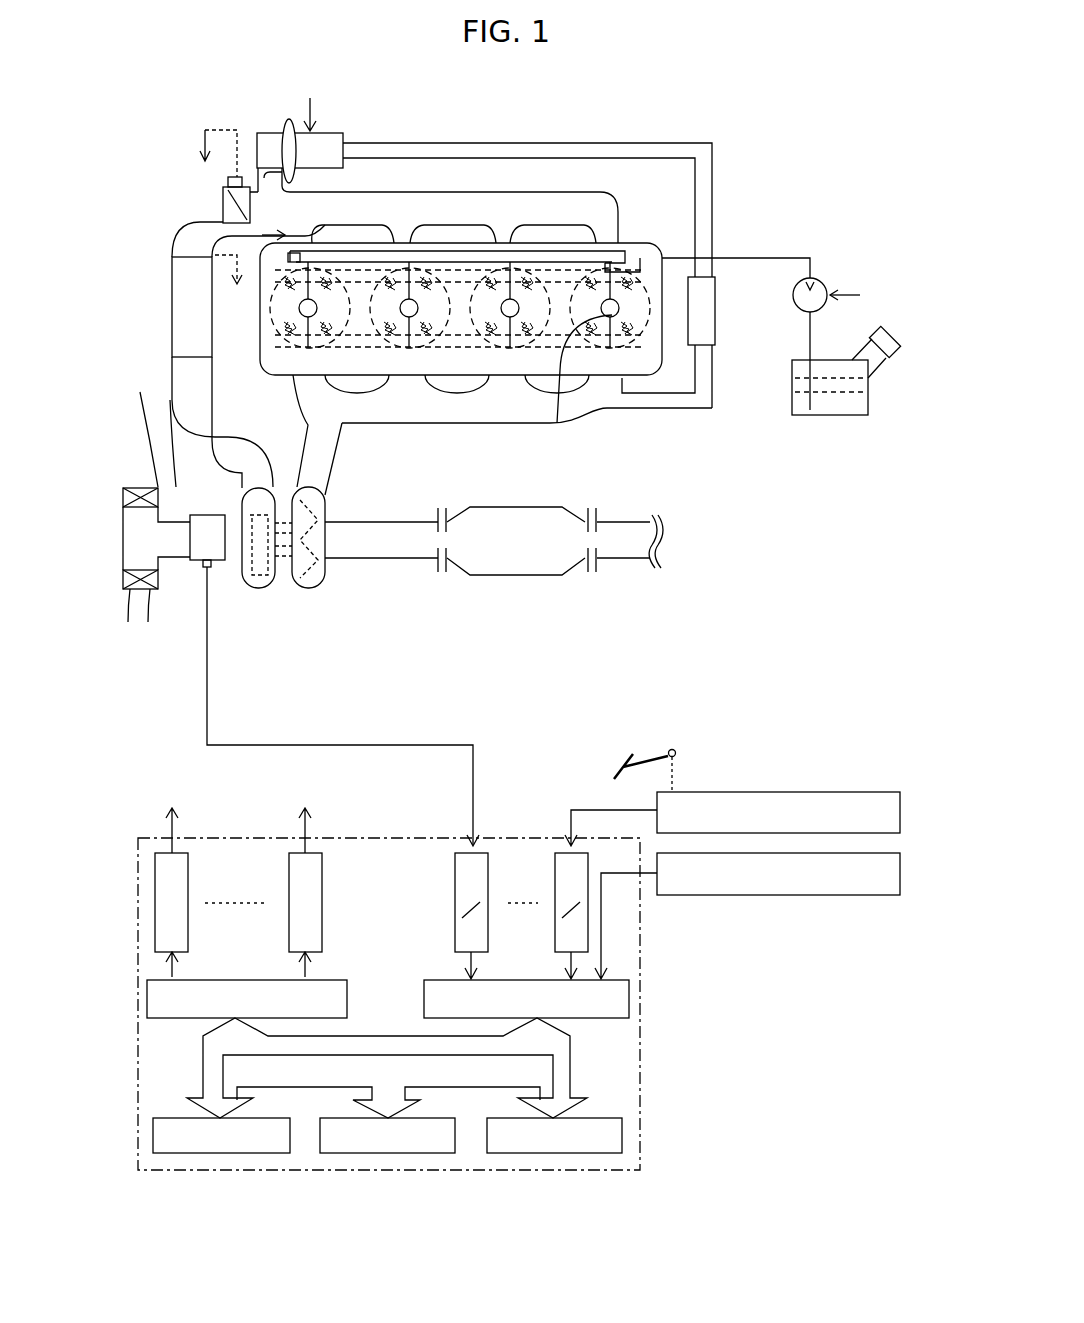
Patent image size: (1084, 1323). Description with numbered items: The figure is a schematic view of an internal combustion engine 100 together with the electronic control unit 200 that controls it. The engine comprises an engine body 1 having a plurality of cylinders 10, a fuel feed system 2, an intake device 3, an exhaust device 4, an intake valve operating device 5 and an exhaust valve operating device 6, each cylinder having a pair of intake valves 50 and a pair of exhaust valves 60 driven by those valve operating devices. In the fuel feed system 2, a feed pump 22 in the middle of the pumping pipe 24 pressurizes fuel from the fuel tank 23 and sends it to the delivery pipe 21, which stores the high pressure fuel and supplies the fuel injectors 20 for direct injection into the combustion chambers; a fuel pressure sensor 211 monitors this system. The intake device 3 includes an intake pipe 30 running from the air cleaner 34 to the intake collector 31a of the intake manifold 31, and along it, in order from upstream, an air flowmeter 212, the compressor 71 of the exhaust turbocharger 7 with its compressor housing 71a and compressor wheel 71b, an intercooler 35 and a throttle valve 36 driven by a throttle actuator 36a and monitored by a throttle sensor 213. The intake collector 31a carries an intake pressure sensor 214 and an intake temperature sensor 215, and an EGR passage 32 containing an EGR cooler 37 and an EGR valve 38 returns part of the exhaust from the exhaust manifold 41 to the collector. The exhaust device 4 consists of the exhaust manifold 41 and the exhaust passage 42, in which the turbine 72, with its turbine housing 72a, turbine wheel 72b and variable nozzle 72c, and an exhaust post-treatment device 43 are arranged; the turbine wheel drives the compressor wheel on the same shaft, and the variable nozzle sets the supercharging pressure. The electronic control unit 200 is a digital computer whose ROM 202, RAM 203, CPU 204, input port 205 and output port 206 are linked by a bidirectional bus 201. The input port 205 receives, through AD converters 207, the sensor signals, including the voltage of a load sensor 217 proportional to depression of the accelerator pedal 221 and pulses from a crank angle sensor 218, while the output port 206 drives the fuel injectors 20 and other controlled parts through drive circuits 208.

The engine body 1 is at (640, 243).
The fuel feed system 2 is at (785, 242).
The intake device 3 is at (130, 242).
The exhaust device 4 is at (566, 450).
The intake valve operating device 5 is at (645, 272).
The exhaust valve operating device 6 is at (638, 380).
The exhaust turbocharger 7 is at (350, 650).
The cylinder 10 is at (647, 370).
The fuel injector 20 is at (457, 361).
The delivery pipe 21 is at (612, 245).
The feed pump 22 is at (820, 282).
The fuel tank 23 is at (828, 418).
The pumping pipe 24 is at (735, 257).
The intake pipe 30 is at (152, 425).
The intake manifold 31 is at (512, 192).
The intake collector 31a is at (292, 181).
The EGR passage 32 is at (486, 143).
The air cleaner 34 is at (164, 592).
The intercooler 35 is at (172, 312).
The throttle valve 36 is at (232, 188).
The throttle actuator 36a is at (228, 180).
The EGR cooler 37 is at (718, 312).
The EGR valve 38 is at (318, 130).
The exhaust manifold 41 is at (388, 521).
The exhaust passage 42 is at (627, 560).
The exhaust post-treatment device 43 is at (518, 576).
The intake valve 50 is at (445, 345).
The exhaust valve 60 is at (462, 345).
The compressor 71 is at (270, 590).
The compressor housing 71a is at (260, 590).
The compressor wheel 71b is at (265, 592).
The turbine 72 is at (308, 592).
The turbine housing 72a is at (330, 565).
The turbine wheel 72b is at (326, 515).
The variable nozzle 72c is at (305, 480).
The internal combustion engine 100 is at (745, 165).
The electronic control unit 200 is at (372, 800).
The bidirectional bus 201 is at (575, 1078).
The ROM 202 is at (232, 1153).
The RAM 203 is at (388, 1153).
The CPU 204 is at (556, 1153).
The input port 205 is at (428, 978).
The output port 206 is at (338, 978).
The AD converter 207 is at (555, 855).
The drive circuit 208 is at (290, 855).
The fuel pressure sensor 211 is at (292, 263).
The air flowmeter 212 is at (205, 515).
The throttle sensor 213 is at (216, 150).
The intake pressure sensor 214 is at (235, 230).
The intake temperature sensor 215 is at (318, 240).
The load sensor 217 is at (838, 792).
The crank angle sensor 218 is at (855, 897).
The accelerator pedal 221 is at (652, 763).